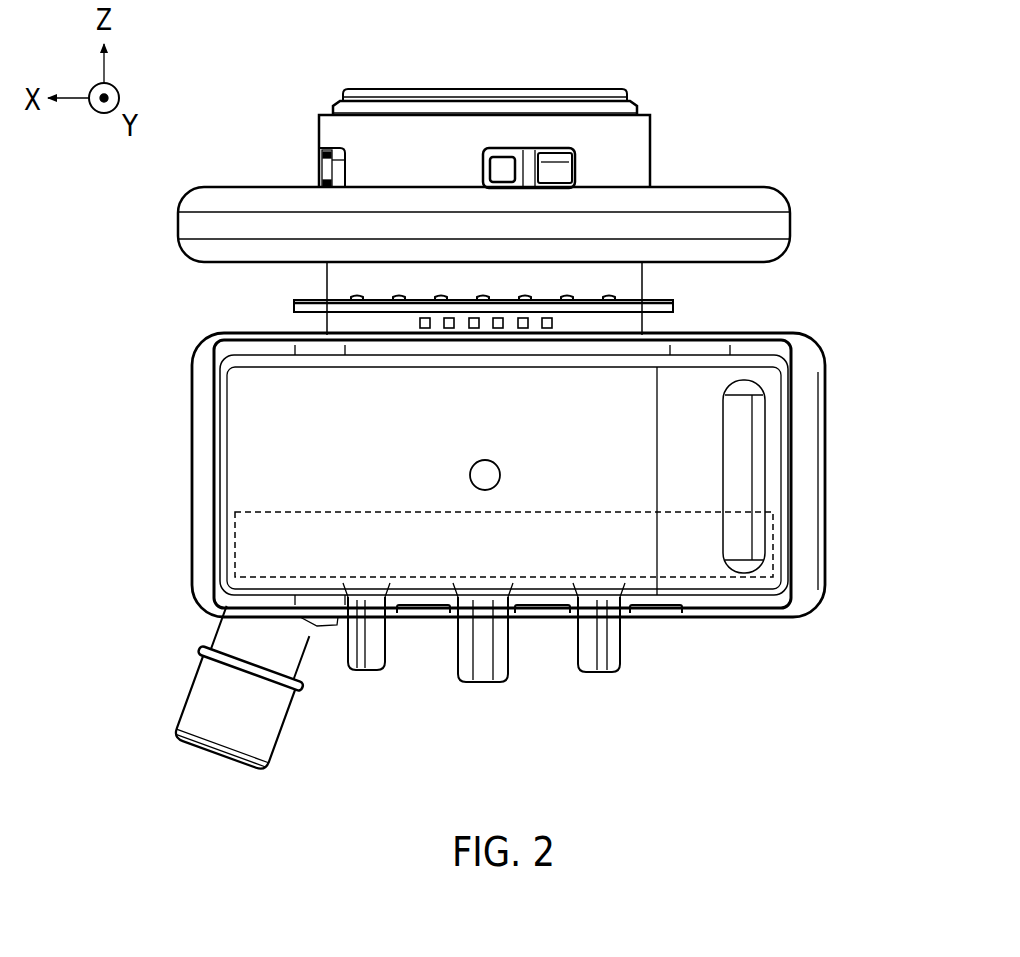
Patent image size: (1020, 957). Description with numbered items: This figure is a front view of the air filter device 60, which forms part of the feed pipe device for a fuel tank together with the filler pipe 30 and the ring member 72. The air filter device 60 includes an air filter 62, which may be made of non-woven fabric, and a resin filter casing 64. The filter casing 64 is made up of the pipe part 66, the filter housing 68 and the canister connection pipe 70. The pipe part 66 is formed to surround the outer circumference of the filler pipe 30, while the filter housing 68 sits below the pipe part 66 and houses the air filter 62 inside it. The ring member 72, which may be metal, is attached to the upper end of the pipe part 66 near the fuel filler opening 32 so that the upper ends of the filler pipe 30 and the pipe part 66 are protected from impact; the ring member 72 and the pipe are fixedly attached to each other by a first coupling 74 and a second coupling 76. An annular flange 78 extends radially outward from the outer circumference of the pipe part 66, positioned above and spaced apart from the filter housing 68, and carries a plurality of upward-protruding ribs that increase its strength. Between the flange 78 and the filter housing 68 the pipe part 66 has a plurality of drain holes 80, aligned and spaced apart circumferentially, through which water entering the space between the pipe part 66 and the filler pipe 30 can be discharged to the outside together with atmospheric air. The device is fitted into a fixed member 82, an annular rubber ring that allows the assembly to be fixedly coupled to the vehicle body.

The air filter device 60 is at (312, 50).
The filler pipe 30 is at (630, 101).
The fuel filler opening 32 is at (598, 89).
The air filter 62 is at (773, 537).
The filter casing 64 is at (546, 498).
The pipe part 66 is at (642, 278).
The filter housing 68 is at (826, 455).
The canister connection pipe 70 is at (262, 735).
The ring member 72 is at (650, 155).
The first coupling 74 is at (508, 146).
The second coupling 76 is at (352, 160).
The flange 78 is at (673, 307).
The drain holes 80 is at (523, 329).
The fixed member 82 is at (745, 188).